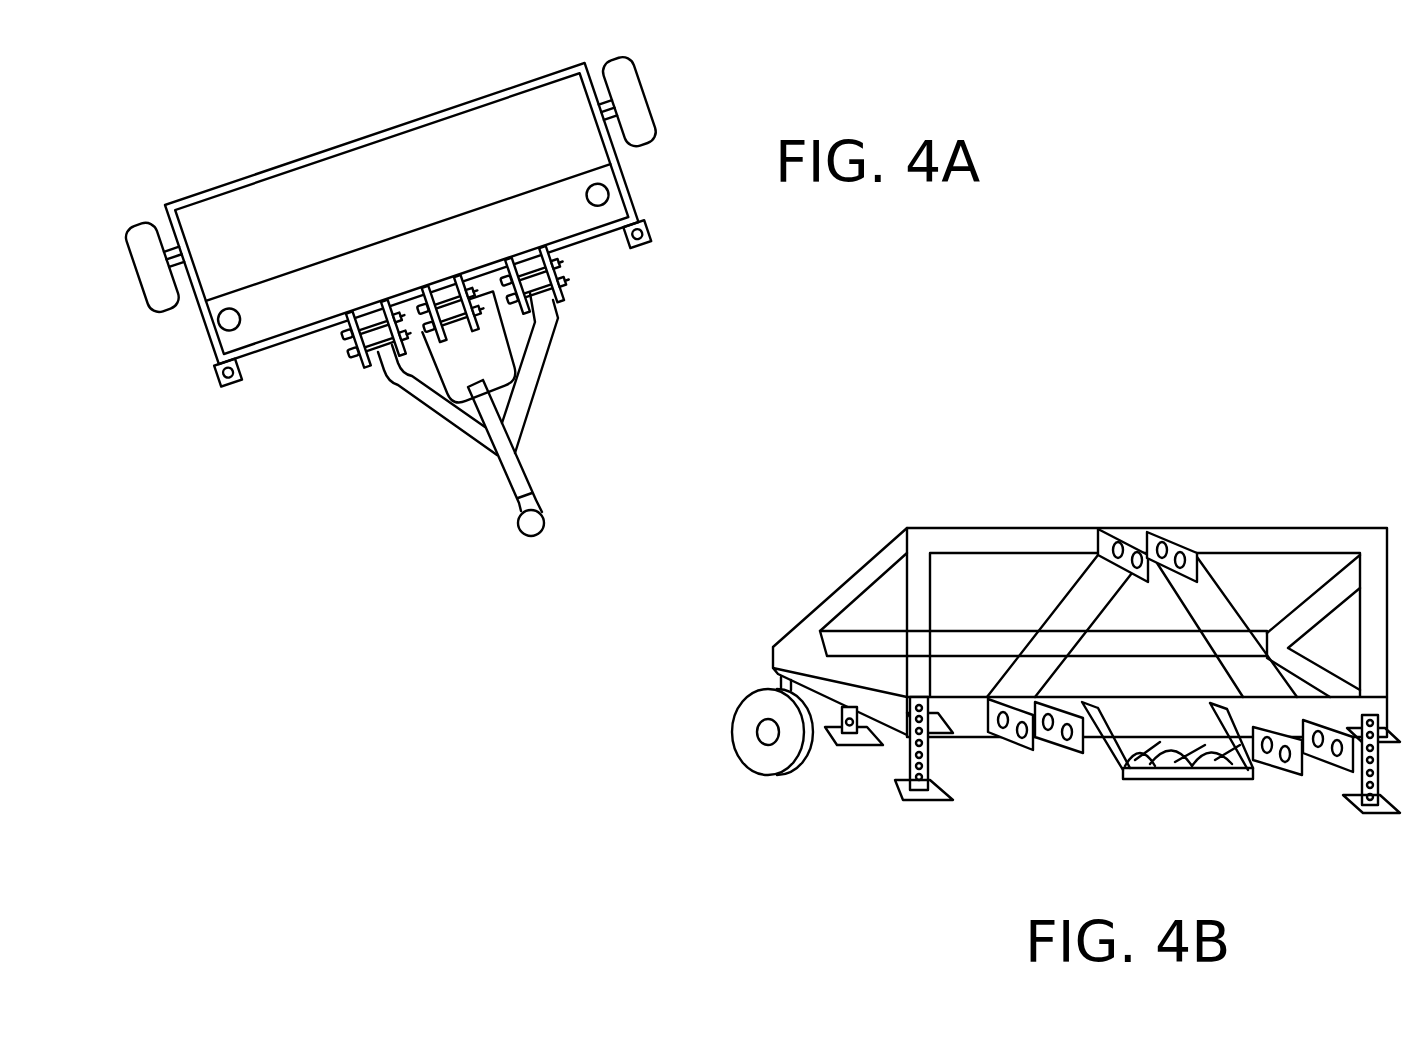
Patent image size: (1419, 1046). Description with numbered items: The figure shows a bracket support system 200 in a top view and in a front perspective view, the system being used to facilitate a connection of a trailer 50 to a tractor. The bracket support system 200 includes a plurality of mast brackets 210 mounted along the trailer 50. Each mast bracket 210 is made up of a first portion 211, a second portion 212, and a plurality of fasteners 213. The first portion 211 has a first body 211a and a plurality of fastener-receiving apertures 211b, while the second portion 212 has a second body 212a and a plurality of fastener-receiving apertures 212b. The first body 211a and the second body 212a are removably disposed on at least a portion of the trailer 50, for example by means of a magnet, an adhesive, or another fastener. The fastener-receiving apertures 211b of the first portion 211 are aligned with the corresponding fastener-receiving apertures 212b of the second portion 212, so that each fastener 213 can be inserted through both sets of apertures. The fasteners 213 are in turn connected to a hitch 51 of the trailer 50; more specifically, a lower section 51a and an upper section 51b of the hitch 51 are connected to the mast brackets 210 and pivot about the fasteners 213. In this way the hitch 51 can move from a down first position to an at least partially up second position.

In FIG. 4A, the bracket support system 200 is at (213, 102).
In FIG. 4B, the bracket support system 200 is at (1347, 455).
In FIG. 4A, the trailer 50 is at (512, 112).
In FIG. 4B, the trailer 50 is at (833, 684).
In FIG. 4A, the hitch 51 is at (633, 495).
In FIG. 4A, the lower section 51a is at (532, 372).
In FIG. 4A, the upper section 51b is at (490, 420).
In FIG. 4A, the mast bracket 210 is at (606, 348).
In FIG. 4B, the mast bracket 210 is at (1194, 550).
In FIG. 4A, the fastener 213 is at (569, 262).
In FIG. 4B, the first portion 211 is at (1085, 475).
In FIG. 4B, the first body 211a is at (1108, 528).
In FIG. 4B, the fastener-receiving aperture 211b is at (1100, 548).
In FIG. 4B, the second portion 212 is at (1123, 500).
In FIG. 4B, the second body 212a is at (1160, 528).
In FIG. 4B, the fastener-receiving aperture 212b is at (1177, 547).